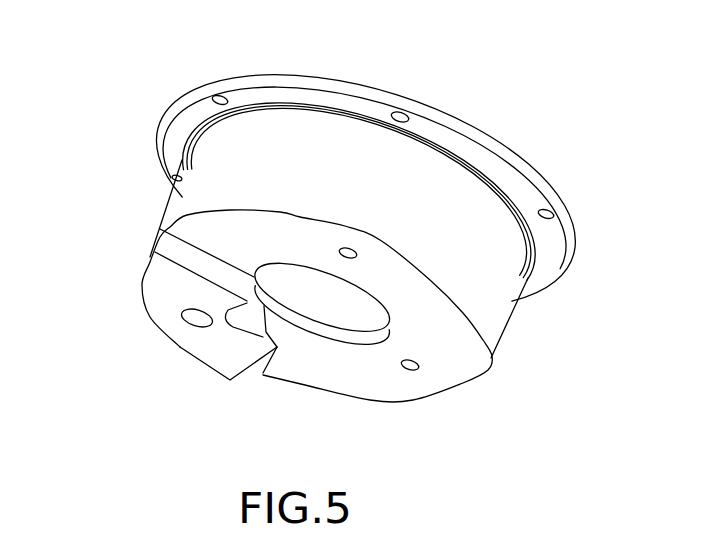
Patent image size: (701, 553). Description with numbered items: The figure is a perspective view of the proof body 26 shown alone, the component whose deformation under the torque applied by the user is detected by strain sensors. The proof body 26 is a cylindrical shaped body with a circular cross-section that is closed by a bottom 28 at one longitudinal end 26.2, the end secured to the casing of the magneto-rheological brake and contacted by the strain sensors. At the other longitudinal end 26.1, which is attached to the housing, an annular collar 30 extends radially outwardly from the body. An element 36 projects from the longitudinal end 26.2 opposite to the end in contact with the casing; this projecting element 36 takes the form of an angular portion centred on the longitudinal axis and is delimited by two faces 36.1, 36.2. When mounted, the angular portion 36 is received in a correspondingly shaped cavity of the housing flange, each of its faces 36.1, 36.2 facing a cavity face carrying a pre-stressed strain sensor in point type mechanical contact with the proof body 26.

The proof body 26 is at (351, 94).
The longitudinal end 26.1 is at (490, 128).
The longitudinal end 26.2 is at (359, 337).
The bottom 28 is at (460, 363).
The annular collar 30 is at (553, 263).
The element 36 is at (165, 346).
The face 36.1 is at (174, 249).
The face 36.2 is at (264, 373).